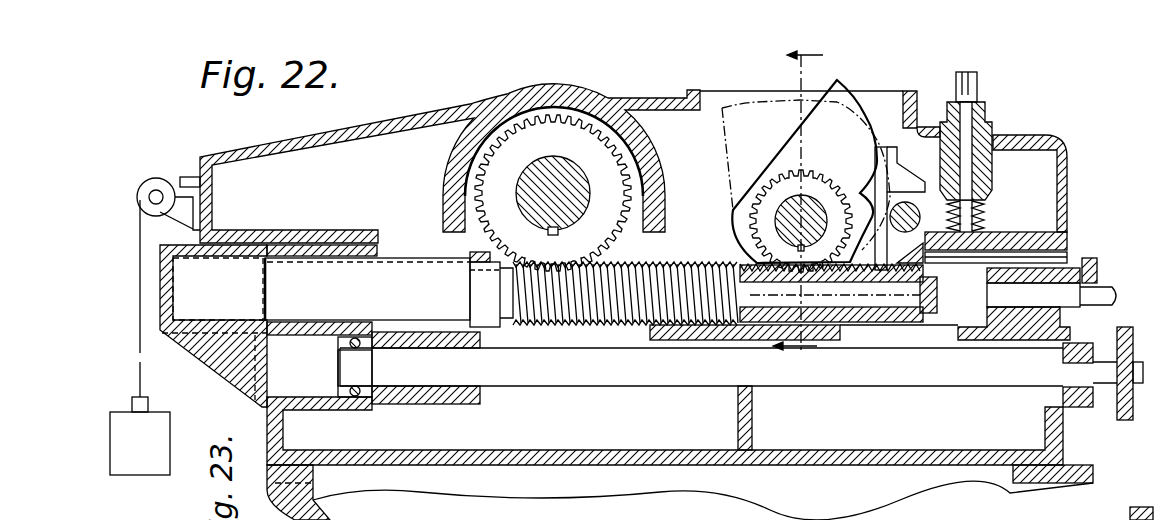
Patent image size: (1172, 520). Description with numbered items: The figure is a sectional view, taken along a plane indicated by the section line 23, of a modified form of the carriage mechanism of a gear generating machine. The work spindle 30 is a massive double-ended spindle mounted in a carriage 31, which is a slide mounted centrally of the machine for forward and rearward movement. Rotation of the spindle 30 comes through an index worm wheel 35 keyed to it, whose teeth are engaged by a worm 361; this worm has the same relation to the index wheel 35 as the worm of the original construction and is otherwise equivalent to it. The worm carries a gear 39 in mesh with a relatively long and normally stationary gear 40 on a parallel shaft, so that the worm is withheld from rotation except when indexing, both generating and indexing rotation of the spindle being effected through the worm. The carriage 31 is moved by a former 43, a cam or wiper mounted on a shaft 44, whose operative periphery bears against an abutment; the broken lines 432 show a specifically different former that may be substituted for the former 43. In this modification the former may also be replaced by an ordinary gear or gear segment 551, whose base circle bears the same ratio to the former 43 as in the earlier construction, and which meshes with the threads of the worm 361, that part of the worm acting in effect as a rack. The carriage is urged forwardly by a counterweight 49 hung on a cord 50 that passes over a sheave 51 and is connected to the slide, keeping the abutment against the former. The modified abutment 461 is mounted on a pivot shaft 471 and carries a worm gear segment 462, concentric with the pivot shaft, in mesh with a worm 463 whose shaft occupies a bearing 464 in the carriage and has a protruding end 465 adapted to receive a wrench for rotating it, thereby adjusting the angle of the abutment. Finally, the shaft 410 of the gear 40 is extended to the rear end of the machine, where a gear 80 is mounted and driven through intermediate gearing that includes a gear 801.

The section line 23 is at (784, 209).
The work spindle 30 is at (538, 164).
The carriage 31 is at (497, 92).
The index worm wheel 35 is at (580, 143).
The gear 39 is at (470, 253).
The gear 40 is at (457, 404).
The former 43 is at (852, 107).
The shaft 44 is at (790, 203).
The counterweight 49 is at (116, 421).
The cord 50 is at (139, 298).
The sheave 51 is at (163, 186).
The gear 80 is at (1127, 422).
The worm 361 is at (610, 320).
The shaft 410 is at (937, 379).
The different former 432 is at (722, 108).
The abutment 461 is at (882, 184).
The worm gear segment 462 is at (934, 204).
The worm 463 is at (982, 224).
The bearing 464 is at (990, 127).
The protruding end 465 is at (977, 85).
The pivot shaft 471 is at (908, 203).
The gear 551 is at (748, 204).
The gear 801 is at (1090, 263).